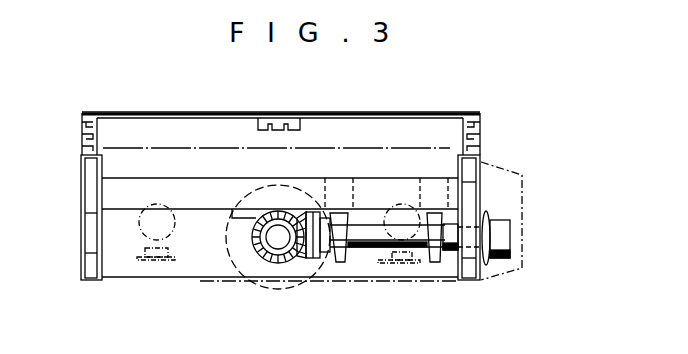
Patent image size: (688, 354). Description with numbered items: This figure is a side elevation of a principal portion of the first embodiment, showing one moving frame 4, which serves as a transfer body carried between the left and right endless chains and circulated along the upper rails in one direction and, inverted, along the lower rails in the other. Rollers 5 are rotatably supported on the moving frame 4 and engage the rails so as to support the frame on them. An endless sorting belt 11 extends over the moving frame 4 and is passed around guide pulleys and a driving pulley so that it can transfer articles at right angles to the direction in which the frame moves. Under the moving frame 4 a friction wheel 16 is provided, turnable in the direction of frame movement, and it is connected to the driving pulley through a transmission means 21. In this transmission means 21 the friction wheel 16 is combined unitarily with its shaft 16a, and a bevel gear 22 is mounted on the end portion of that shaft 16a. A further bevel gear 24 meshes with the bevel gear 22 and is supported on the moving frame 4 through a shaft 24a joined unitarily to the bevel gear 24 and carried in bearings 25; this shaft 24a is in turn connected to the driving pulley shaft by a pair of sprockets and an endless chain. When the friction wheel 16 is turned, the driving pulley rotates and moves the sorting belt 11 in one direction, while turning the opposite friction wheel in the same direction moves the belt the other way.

The moving frame 4 is at (478, 116).
The roller 5 is at (140, 234).
The sorting belt 11 is at (446, 112).
The friction wheel 16 is at (226, 254).
The shaft of friction wheel 16a is at (272, 258).
The transmission means 21 is at (530, 225).
The bevel gear 22 is at (276, 243).
The bevel gear 24 is at (303, 250).
The shaft 24a is at (370, 243).
The bearing 25 is at (340, 263).